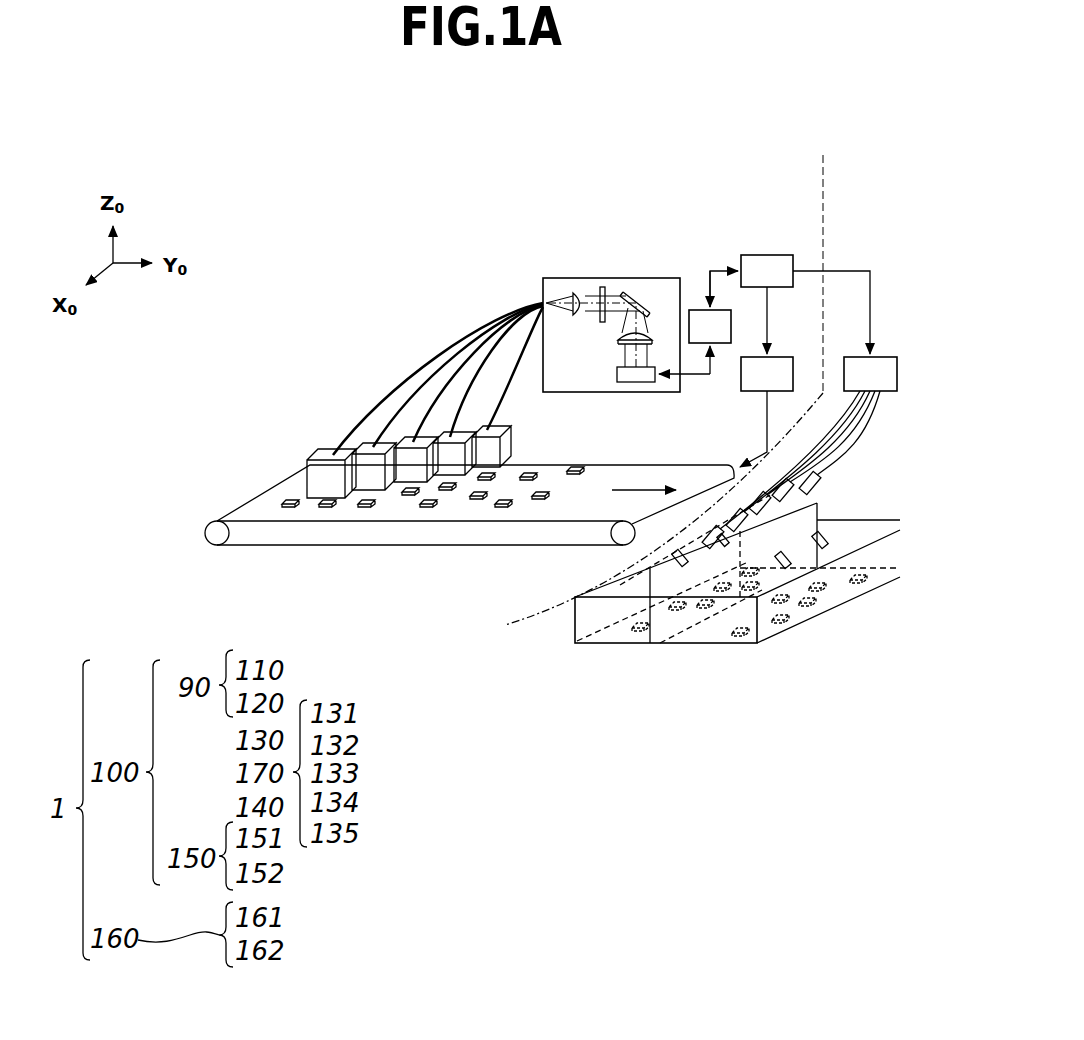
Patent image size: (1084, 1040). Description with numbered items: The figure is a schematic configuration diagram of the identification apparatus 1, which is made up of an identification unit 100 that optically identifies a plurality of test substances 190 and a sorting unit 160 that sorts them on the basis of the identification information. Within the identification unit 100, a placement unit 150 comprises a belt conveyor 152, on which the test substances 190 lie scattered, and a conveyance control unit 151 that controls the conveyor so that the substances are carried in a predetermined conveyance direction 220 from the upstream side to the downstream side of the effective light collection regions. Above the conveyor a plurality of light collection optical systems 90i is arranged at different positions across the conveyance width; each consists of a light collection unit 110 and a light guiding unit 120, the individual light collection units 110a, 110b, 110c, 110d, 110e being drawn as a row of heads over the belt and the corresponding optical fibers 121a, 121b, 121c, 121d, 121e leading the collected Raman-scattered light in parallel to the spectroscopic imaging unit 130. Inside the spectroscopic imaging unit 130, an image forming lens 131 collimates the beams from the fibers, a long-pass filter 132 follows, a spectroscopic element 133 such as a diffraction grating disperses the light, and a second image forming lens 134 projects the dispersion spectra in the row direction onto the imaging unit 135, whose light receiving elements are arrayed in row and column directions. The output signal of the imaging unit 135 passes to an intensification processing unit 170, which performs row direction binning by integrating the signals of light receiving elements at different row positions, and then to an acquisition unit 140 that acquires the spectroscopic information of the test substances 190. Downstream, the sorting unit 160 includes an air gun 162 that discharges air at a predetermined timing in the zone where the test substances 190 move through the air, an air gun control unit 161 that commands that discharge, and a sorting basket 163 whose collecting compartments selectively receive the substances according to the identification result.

The identification apparatus 1 is at (231, 214).
The identification unit 100 is at (815, 174).
The light collection optical system 90i is at (117, 362).
The light collection unit 110 is at (513, 633).
The light collection unit 110a is at (326, 487).
The light collection unit 110b is at (367, 482).
The light collection unit 110c is at (410, 470).
The light collection unit 110d is at (450, 465).
The light collection unit 110e is at (487, 460).
The light guiding unit 120 is at (474, 208).
The optical fiber 121a is at (343, 422).
The optical fiber 121b is at (398, 388).
The optical fiber 121c is at (445, 370).
The optical fiber 121d is at (482, 366).
The optical fiber 121e is at (520, 320).
The spectroscopic imaging unit 130 is at (558, 277).
The image forming lens 131 is at (577, 292).
The long-pass filter 132 is at (603, 287).
The spectroscopic element 133 is at (640, 292).
The image forming lens 134 is at (653, 334).
The imaging unit 135 is at (612, 384).
The acquisition unit 140 is at (767, 254).
The intensification processing unit 170 is at (728, 344).
The placement unit 150 is at (637, 400).
The conveyance control unit 151 is at (752, 392).
The belt conveyor 152 is at (228, 547).
The test substance 190 is at (538, 503).
The conveyance direction 220 is at (640, 492).
The sorting unit 160 is at (945, 174).
The air gun control unit 161 is at (893, 356).
The air gun 162 is at (888, 400).
The sorting basket 163 is at (598, 646).